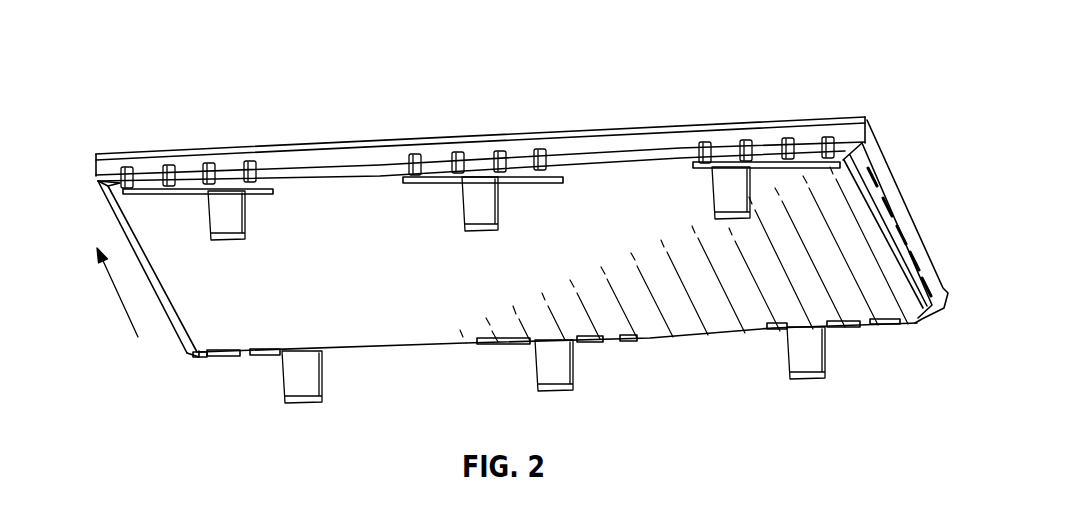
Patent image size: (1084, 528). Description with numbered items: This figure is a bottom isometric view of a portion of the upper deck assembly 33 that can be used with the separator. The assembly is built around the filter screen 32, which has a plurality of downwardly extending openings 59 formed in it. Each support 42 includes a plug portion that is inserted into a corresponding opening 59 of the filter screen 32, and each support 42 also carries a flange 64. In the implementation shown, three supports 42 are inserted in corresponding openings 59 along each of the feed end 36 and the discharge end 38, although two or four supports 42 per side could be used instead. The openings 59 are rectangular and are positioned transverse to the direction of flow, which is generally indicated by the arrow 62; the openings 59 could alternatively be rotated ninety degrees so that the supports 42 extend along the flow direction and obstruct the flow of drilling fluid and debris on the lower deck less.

The filter screen 32 is at (332, 150).
The upper deck assembly 33 is at (761, 40).
The feed end 36 is at (673, 138).
The discharge end 38 is at (423, 322).
The support 42 is at (223, 212).
The opening 59 is at (192, 188).
The arrow 62 is at (118, 298).
The flange 64 is at (487, 170).